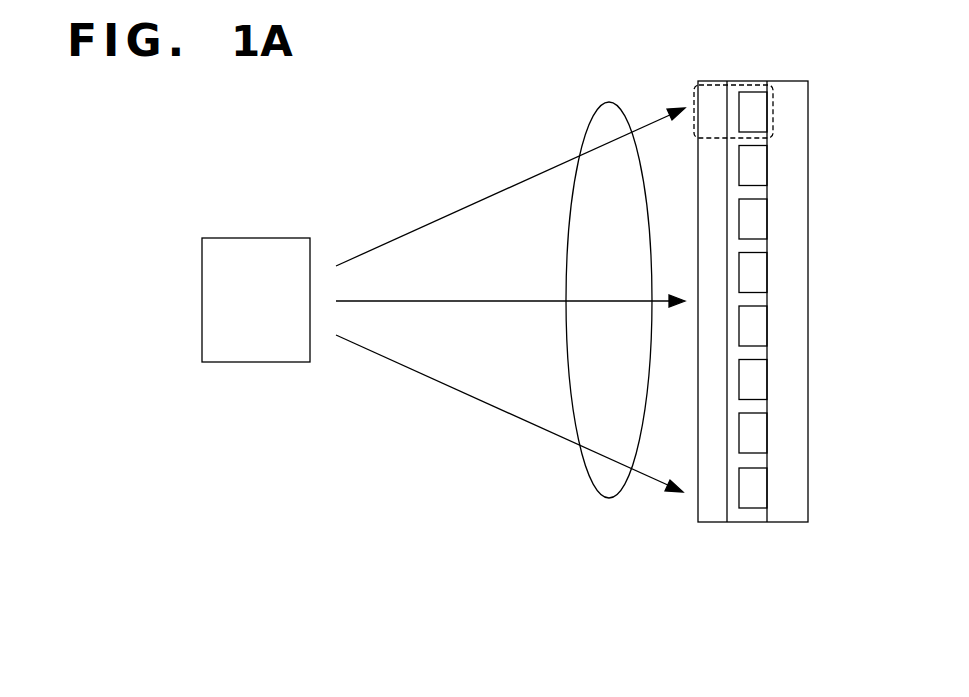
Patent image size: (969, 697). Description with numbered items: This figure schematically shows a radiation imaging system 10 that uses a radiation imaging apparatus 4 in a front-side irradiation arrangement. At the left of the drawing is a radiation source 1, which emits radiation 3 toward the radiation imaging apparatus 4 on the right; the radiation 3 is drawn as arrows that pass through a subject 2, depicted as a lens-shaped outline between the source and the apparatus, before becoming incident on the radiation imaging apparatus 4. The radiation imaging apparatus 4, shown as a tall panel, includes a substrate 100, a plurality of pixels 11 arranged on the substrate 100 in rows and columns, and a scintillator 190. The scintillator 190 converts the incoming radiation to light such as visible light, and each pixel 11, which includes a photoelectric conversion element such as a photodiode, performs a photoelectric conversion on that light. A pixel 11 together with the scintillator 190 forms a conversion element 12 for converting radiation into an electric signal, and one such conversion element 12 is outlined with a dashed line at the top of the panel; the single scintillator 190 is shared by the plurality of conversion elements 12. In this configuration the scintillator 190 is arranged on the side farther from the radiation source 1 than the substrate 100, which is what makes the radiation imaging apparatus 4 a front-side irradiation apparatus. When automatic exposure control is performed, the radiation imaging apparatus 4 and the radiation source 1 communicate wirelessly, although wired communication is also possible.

The radiation imaging system 10 is at (341, 98).
The radiation source 1 is at (258, 362).
The radiation 3 is at (413, 370).
The subject 2 is at (608, 499).
The radiation imaging apparatus 4 is at (766, 351).
The substrate 100 is at (787, 510).
The scintillator 190 is at (712, 515).
The pixel 11 is at (753, 497).
The conversion element 12 is at (727, 83).